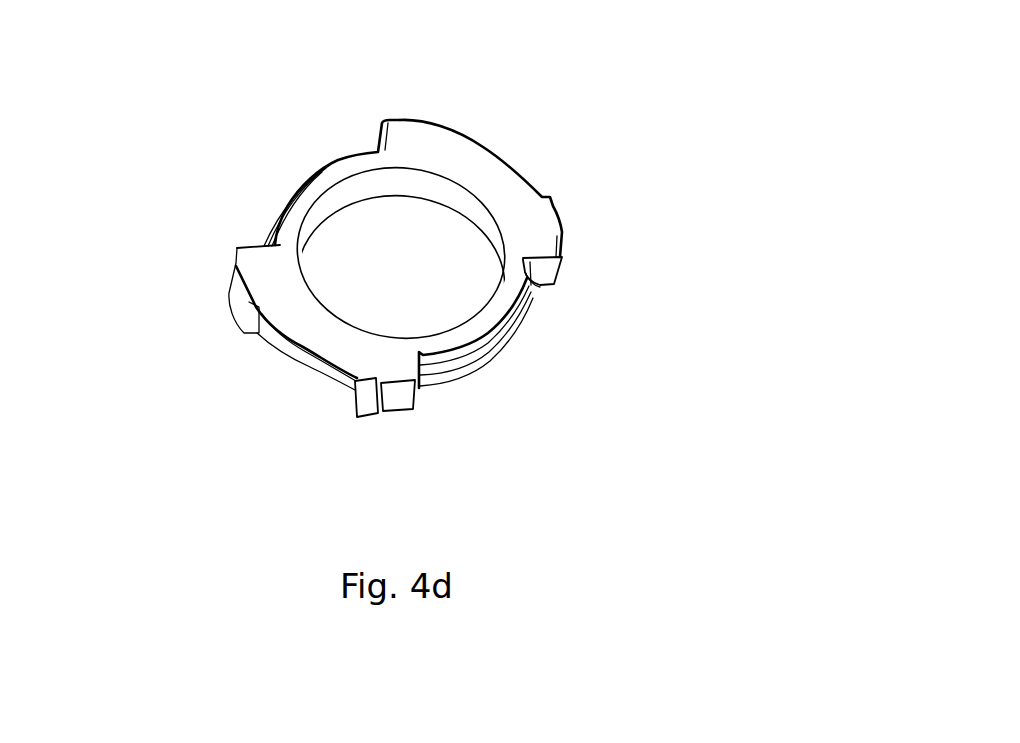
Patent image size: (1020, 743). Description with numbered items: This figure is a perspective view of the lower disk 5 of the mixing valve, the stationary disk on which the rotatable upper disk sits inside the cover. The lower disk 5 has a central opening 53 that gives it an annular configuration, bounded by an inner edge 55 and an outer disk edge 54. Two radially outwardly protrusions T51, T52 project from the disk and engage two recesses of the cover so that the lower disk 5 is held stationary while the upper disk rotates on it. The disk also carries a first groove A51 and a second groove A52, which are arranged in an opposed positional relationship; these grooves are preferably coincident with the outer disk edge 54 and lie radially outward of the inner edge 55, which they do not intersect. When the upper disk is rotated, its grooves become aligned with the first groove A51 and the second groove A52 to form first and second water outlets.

The lower disk 5 is at (557, 381).
The central opening 53 is at (455, 245).
The outer disk edge 54 is at (295, 362).
The inner edge 55 is at (432, 183).
The first groove A51 is at (337, 158).
The second groove A52 is at (475, 362).
The radially outwardly protrusion T51 is at (237, 272).
The radially outwardly protrusion T52 is at (680, 308).